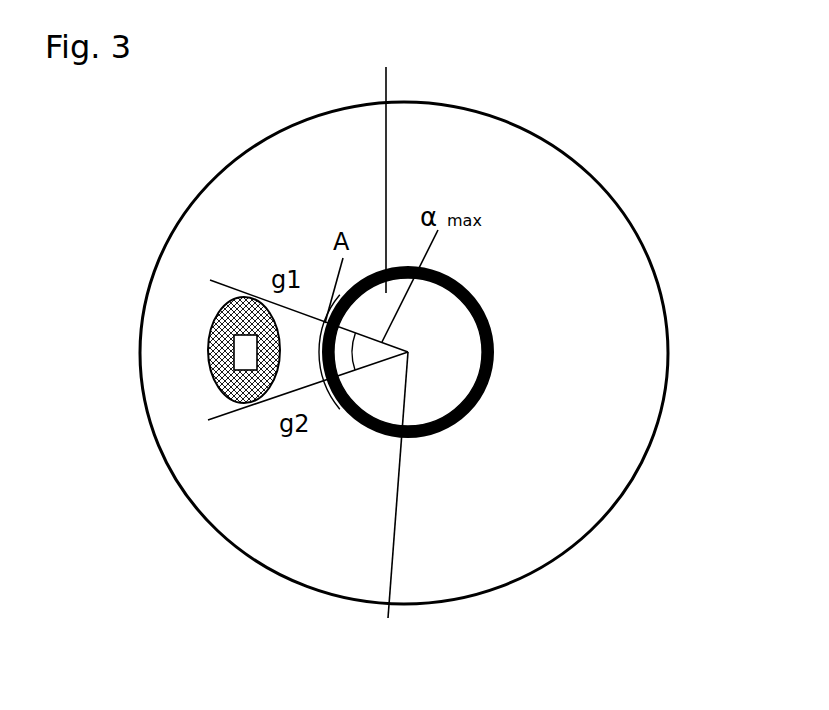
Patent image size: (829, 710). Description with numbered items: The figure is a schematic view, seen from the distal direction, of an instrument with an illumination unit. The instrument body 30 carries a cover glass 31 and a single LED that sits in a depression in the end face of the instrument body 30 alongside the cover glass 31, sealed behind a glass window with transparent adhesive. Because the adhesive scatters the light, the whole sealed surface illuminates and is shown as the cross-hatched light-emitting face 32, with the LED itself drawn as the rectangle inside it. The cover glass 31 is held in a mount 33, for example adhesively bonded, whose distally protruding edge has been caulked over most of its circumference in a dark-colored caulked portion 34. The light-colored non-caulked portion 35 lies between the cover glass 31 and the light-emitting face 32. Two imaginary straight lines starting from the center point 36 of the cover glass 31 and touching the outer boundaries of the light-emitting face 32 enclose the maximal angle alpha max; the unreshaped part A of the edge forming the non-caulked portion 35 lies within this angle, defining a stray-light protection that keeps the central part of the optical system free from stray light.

The instrument body 30 is at (635, 118).
The cover glass 31 is at (386, 153).
The light-emitting face 32 is at (215, 325).
The mount 33 is at (450, 273).
The caulked portion 34 is at (465, 288).
The non-caulked portion 35 is at (325, 320).
The center point 36 is at (390, 513).